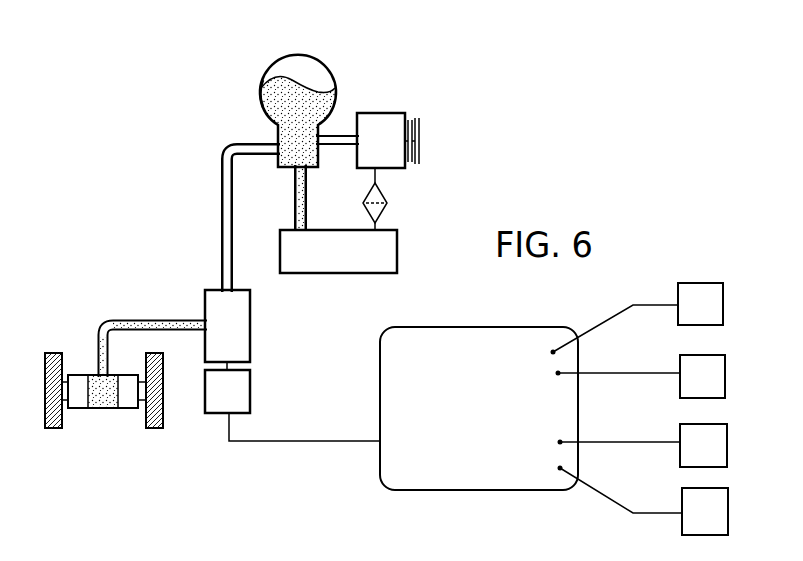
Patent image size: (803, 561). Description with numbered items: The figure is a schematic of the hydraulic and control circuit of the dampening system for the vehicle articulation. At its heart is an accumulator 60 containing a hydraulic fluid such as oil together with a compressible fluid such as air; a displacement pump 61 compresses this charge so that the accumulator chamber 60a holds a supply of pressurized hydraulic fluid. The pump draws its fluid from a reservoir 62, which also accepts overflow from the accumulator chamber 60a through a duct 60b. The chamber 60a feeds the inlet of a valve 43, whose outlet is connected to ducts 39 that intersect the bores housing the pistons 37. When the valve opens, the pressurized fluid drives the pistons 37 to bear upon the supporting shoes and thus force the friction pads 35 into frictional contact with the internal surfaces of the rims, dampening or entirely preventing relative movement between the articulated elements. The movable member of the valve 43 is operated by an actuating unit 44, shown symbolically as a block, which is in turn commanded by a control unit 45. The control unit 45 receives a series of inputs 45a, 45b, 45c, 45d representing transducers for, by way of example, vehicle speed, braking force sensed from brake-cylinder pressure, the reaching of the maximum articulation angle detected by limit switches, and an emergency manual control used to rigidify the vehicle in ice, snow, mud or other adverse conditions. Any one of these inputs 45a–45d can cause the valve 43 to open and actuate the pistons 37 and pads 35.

The friction pads 35 is at (45, 366).
The pistons 37 is at (136, 409).
The ducts 39 is at (148, 320).
The valve 43 is at (227, 326).
The actuating unit 44 is at (227, 391).
The control unit 45 is at (479, 408).
The input 45a is at (638, 317).
The input 45b is at (641, 376).
The input 45c is at (643, 445).
The input 45d is at (644, 501).
The accumulator 60 is at (337, 88).
The accumulator chamber 60a is at (263, 107).
The duct 60b is at (296, 181).
The displacement pump 61 is at (401, 142).
The reservoir 62 is at (338, 251).